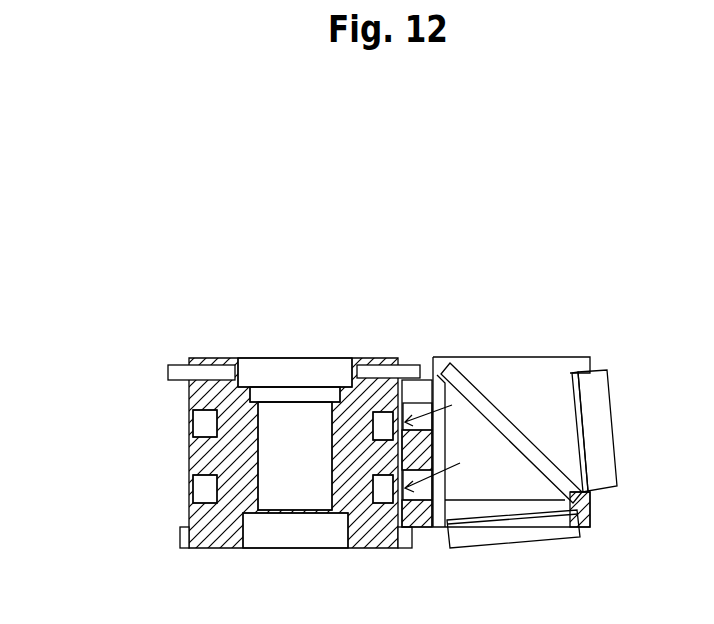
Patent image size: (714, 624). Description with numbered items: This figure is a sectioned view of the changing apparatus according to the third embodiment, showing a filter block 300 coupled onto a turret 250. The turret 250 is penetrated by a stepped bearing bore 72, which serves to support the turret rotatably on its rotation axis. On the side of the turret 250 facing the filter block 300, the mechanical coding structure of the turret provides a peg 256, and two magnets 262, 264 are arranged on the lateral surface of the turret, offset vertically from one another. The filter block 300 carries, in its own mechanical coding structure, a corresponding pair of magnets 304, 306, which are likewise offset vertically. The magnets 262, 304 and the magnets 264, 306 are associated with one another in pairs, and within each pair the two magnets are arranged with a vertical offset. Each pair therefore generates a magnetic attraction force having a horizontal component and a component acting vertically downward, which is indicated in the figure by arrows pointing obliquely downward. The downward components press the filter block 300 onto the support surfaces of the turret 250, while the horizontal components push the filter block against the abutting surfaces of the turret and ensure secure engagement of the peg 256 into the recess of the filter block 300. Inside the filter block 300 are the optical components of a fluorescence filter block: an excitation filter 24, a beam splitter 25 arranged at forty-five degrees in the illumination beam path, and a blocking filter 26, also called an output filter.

The turret 250 is at (222, 445).
The bearing bore 72 is at (258, 372).
The peg 256 is at (360, 372).
The magnet 262 is at (378, 423).
The magnet 264 is at (385, 497).
The magnet 304 is at (420, 408).
The magnet 306 is at (435, 487).
The filter block 300 is at (580, 313).
The beam splitter 25 is at (502, 423).
The excitation filter 24 is at (610, 418).
The blocking filter 26 is at (528, 543).